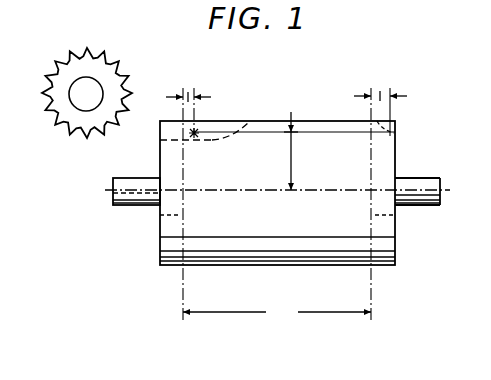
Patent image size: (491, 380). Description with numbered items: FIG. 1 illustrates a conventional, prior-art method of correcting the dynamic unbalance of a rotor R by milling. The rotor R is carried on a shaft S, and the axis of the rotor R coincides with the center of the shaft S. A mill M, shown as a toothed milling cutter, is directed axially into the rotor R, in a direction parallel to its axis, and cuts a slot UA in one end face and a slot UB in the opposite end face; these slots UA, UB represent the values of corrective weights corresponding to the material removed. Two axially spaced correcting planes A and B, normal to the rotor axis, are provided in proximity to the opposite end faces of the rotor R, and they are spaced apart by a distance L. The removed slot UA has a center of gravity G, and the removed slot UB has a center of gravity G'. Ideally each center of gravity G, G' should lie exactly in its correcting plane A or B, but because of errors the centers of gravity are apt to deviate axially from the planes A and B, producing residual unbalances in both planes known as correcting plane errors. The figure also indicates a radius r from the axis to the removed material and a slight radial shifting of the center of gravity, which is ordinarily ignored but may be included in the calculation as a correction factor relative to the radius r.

The rotor R is at (406, 232).
The shaft S is at (126, 210).
The mill M is at (84, 138).
The correcting plane A is at (182, 217).
The correcting plane B is at (371, 217).
The distance between correcting planes L is at (277, 314).
The center of gravity G is at (277, 125).
The center of gravity G' is at (385, 122).
The slot UA is at (172, 128).
The slot UB is at (396, 133).
The radius r is at (297, 161).